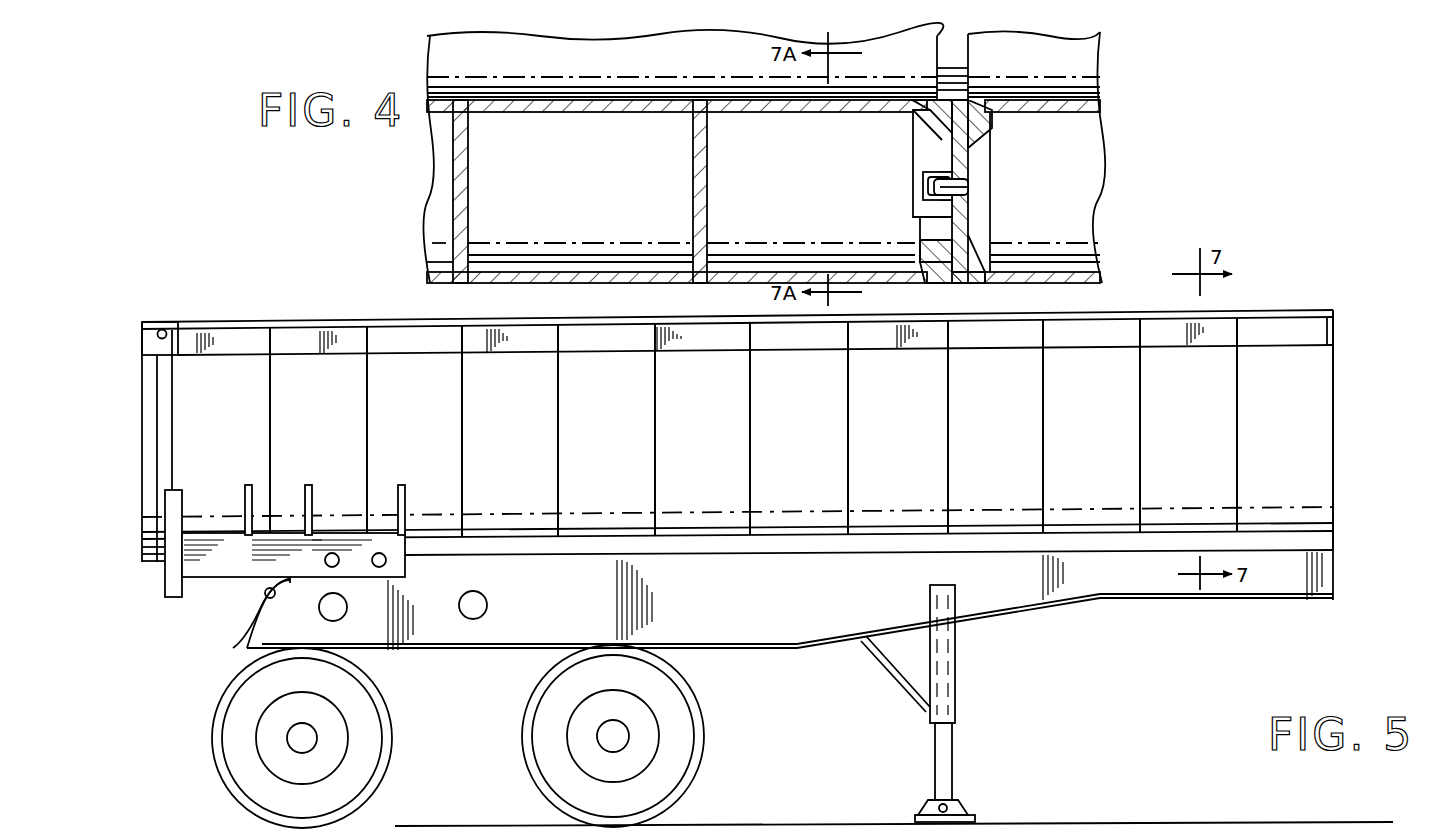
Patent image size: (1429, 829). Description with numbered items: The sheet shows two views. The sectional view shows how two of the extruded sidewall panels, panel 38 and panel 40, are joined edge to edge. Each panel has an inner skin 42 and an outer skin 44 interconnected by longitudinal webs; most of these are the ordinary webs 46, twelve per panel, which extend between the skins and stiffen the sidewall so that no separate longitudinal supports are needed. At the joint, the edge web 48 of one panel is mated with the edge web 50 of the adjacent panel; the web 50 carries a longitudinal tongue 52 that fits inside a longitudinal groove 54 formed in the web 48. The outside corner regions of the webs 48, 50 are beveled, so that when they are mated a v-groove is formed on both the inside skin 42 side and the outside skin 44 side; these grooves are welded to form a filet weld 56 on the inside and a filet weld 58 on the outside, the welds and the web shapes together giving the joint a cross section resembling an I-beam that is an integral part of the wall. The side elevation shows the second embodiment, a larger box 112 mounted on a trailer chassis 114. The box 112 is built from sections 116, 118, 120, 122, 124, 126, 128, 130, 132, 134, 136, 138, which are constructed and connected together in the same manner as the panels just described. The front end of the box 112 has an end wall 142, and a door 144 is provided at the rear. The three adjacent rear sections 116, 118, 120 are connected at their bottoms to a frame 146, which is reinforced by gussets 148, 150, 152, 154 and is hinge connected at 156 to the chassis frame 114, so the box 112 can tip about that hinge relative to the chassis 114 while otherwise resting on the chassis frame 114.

In FIG. 4, the panel 38 is at (446, 209).
In FIG. 4, the panel 40 is at (1104, 155).
In FIG. 4, the inner skin 42 is at (583, 100).
In FIG. 4, the outer skin 44 is at (603, 272).
In FIG. 4, the web 46 is at (466, 176).
In FIG. 4, the web 48 is at (946, 140).
In FIG. 4, the web 50 is at (962, 222).
In FIG. 4, the longitudinal tongue 52 is at (930, 190).
In FIG. 4, the longitudinal groove 54 is at (958, 189).
In FIG. 4, the filet weld 56 is at (955, 50).
In FIG. 4, the filet weld 58 is at (958, 284).
In FIG. 5, the box 112 is at (249, 310).
In FIG. 5, the trailer chassis 114 is at (741, 608).
In FIG. 5, the section 116 is at (193, 415).
In FIG. 5, the section 118 is at (291, 415).
In FIG. 5, the section 120 is at (392, 415).
In FIG. 5, the section 122 is at (489, 415).
In FIG. 5, the section 124 is at (586, 415).
In FIG. 5, the section 126 is at (684, 415).
In FIG. 5, the section 128 is at (780, 415).
In FIG. 5, the section 130 is at (880, 415).
In FIG. 5, the section 132 is at (978, 415).
In FIG. 5, the section 134 is at (1071, 415).
In FIG. 5, the section 136 is at (1168, 415).
In FIG. 5, the section 138 is at (1266, 415).
In FIG. 5, the end wall 142 is at (1335, 326).
In FIG. 5, the door 144 is at (146, 498).
In FIG. 5, the frame 146 is at (218, 562).
In FIG. 5, the gusset 148 is at (173, 562).
In FIG. 5, the gusset 150 is at (245, 502).
In FIG. 5, the gusset 152 is at (312, 502).
In FIG. 5, the gusset 154 is at (405, 502).
In FIG. 5, the hinge connection 156 is at (234, 650).